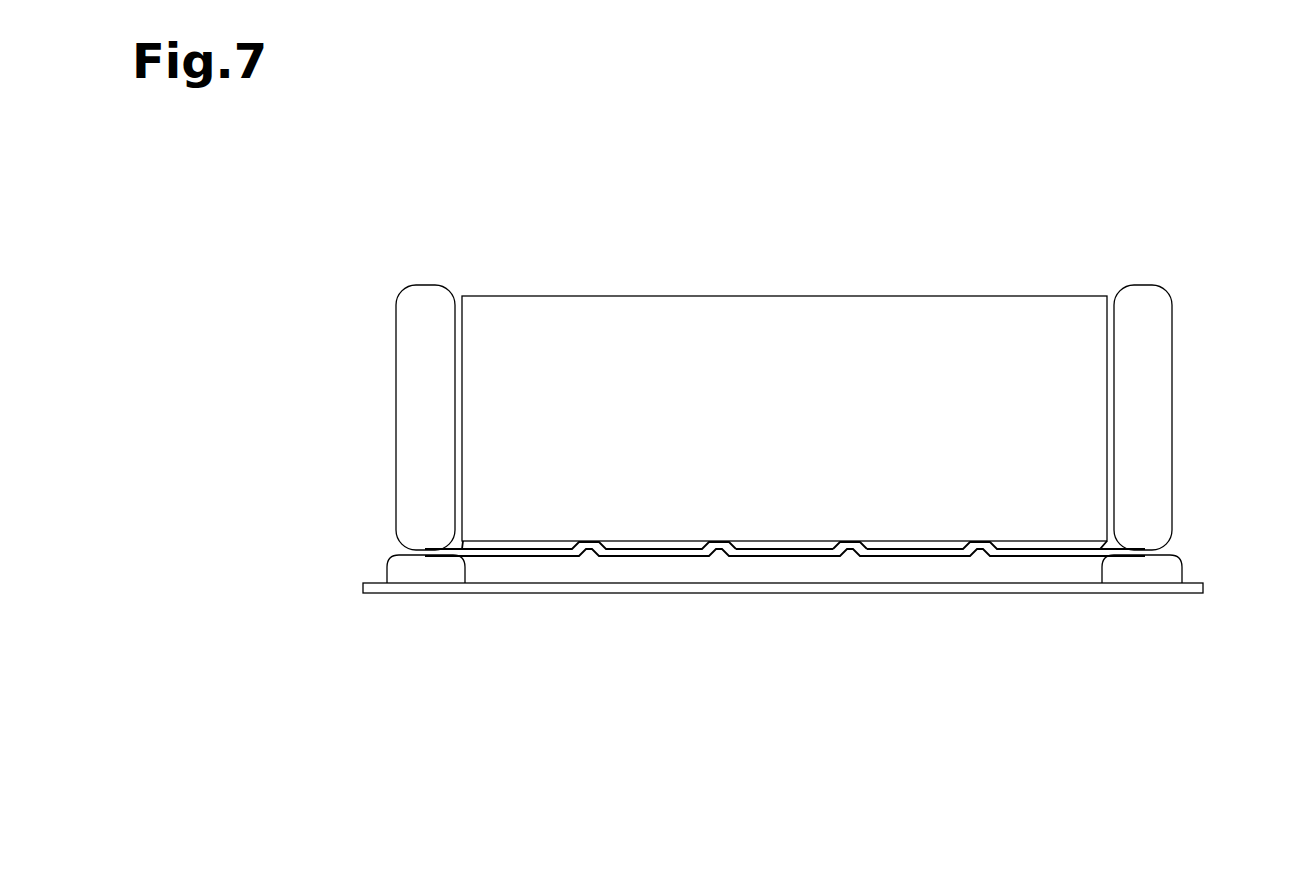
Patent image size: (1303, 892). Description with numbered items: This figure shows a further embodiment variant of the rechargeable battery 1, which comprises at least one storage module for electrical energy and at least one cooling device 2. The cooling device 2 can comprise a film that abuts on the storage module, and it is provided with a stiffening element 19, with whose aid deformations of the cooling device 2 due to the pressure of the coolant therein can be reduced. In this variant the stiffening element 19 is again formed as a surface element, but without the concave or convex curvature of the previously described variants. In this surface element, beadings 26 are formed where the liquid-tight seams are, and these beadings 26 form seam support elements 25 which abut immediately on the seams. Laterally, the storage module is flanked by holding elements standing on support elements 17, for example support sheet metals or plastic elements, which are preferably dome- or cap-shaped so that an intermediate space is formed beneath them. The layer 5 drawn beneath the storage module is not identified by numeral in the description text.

The rechargeable battery 1 is at (1045, 250).
The cooling device 2 is at (791, 579).
The heat conducting layer 5 is at (515, 548).
The support element 17 is at (373, 546).
The stiffening element 19 is at (761, 559).
The seam support element 25 is at (854, 562).
The beading 26 is at (849, 538).